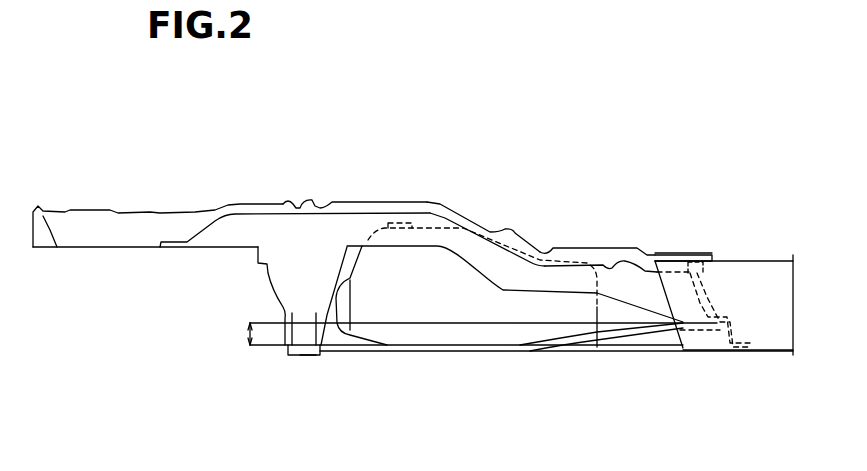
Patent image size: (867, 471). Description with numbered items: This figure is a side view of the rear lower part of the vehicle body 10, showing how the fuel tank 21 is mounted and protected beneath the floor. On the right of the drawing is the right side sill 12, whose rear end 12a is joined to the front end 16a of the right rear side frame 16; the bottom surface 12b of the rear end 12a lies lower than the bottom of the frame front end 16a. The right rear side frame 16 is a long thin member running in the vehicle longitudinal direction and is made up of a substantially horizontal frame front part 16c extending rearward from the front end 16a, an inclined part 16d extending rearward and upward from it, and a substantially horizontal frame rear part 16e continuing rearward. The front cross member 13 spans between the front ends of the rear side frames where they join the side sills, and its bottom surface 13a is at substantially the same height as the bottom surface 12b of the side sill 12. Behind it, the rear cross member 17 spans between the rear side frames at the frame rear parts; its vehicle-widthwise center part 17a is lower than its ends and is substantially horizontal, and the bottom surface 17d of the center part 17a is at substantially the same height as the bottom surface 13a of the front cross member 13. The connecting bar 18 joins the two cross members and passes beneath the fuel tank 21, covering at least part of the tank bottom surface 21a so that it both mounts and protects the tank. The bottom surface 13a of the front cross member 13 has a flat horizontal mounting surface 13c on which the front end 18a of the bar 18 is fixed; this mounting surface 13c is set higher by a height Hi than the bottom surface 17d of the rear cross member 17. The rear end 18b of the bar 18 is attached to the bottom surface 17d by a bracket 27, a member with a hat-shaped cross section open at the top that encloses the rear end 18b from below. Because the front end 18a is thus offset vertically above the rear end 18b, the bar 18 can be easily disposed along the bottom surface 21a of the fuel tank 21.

The vehicle body 10 is at (150, 145).
The right side sill 12 is at (738, 289).
The rear end of right side sill 12a is at (742, 273).
The bottom surface of rear end of right side sill 12b is at (772, 353).
The front cross member 13 is at (725, 299).
The bottom surface of front cross member 13a is at (747, 350).
The mounting surface 13c is at (720, 337).
The right rear side frame 16 is at (493, 214).
The front end of right rear side frame 16a is at (667, 235).
The frame front part 16c is at (609, 272).
The inclined part 16d is at (475, 255).
The frame rear part 16e is at (275, 230).
The rear cross member 17 is at (267, 278).
The center part of rear cross member 17a is at (283, 342).
The bottom surface of center part 17d is at (297, 355).
The connecting bar 18 is at (598, 347).
The front end of connecting bar 18a is at (697, 337).
The rear end of connecting bar 18b is at (348, 346).
The fuel tank 21 is at (452, 297).
The bottom surface of fuel tank 21a is at (502, 347).
The bracket 27 is at (308, 352).
The height Hi is at (250, 333).